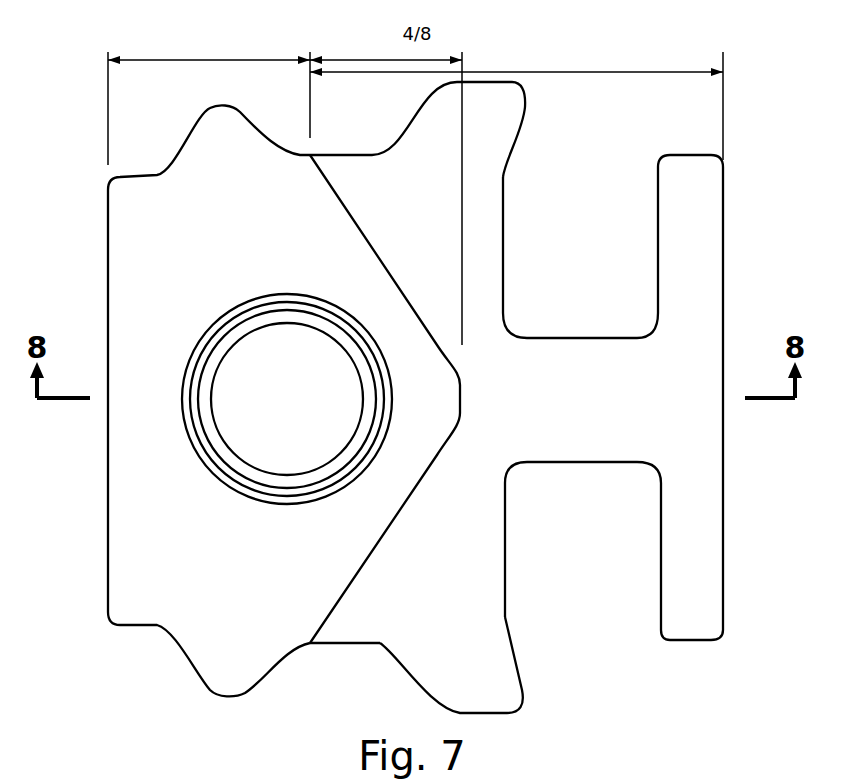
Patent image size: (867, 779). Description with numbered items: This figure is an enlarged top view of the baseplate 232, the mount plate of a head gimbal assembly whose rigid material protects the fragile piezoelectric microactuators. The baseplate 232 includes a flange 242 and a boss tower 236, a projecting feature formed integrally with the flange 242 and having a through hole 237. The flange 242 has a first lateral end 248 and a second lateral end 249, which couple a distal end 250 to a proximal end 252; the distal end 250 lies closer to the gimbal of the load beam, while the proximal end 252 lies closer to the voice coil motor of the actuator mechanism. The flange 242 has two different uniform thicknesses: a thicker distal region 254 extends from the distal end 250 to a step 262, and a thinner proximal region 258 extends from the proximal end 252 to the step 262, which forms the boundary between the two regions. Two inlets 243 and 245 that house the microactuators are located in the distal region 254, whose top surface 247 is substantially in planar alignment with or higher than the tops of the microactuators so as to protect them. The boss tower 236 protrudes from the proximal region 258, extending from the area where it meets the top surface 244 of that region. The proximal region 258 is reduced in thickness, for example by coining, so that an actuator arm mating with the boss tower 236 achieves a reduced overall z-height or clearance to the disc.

The baseplate 232 is at (433, 407).
The boss tower 236 is at (258, 300).
The through hole 237 is at (262, 356).
The flange 242 is at (310, 645).
The inlet 243 is at (575, 530).
The top surface 244 is at (209, 400).
The inlet 245 is at (581, 254).
The top surface 247 is at (582, 400).
The first lateral end 248 is at (415, 130).
The second lateral end 249 is at (490, 714).
The distal end 250 is at (725, 222).
The proximal end 252 is at (108, 258).
The distal region 254 is at (632, 71).
The proximal region 258 is at (213, 59).
The step 262 is at (367, 556).